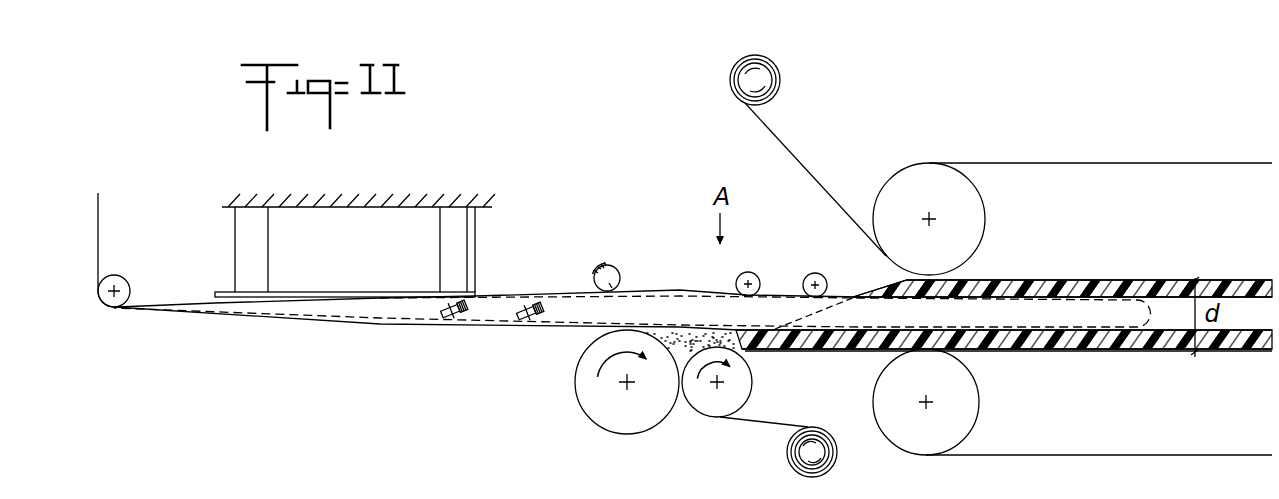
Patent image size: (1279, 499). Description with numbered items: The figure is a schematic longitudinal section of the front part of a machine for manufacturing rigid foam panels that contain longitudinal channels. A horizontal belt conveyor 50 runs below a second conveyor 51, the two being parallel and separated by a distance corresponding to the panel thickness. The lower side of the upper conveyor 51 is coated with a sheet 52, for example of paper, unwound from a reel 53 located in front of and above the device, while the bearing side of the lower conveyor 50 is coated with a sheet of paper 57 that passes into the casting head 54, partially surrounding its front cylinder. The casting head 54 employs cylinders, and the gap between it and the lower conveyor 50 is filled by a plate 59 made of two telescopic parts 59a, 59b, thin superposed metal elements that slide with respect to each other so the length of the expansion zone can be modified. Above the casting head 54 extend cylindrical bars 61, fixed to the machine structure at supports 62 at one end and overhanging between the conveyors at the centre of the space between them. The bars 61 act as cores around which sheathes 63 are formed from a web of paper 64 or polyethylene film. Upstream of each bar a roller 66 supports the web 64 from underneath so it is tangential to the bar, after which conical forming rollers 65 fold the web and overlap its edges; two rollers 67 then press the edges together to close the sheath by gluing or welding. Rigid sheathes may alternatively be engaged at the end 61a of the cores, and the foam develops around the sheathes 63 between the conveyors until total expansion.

The horizontal belt conveyor 50 is at (962, 415).
The second conveyor 51 is at (925, 182).
The sheet 52 is at (817, 180).
The reel 53 is at (780, 86).
The casting head 54 is at (680, 404).
The sheet of paper 57 is at (778, 423).
The plate 59 is at (815, 358).
The first telescopic plate part 59a is at (796, 350).
The second telescopic plate part 59b is at (868, 352).
The bars 61 is at (1052, 295).
The end of the cores 61a is at (300, 292).
The supports 62 is at (240, 238).
The sheathes 63 is at (668, 302).
The web of paper 64 is at (98, 237).
The conical forming rollers 65 is at (615, 268).
The roller 66 is at (125, 285).
The rollers 67 is at (807, 276).